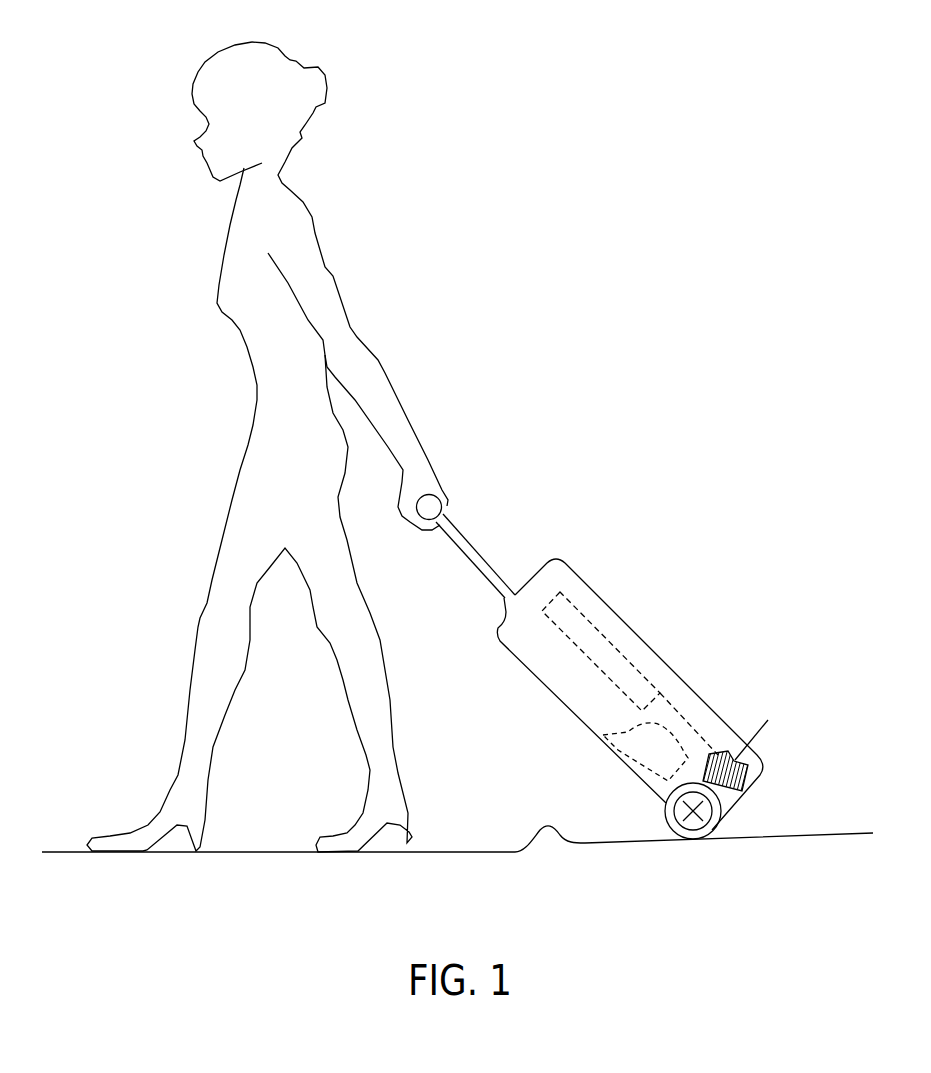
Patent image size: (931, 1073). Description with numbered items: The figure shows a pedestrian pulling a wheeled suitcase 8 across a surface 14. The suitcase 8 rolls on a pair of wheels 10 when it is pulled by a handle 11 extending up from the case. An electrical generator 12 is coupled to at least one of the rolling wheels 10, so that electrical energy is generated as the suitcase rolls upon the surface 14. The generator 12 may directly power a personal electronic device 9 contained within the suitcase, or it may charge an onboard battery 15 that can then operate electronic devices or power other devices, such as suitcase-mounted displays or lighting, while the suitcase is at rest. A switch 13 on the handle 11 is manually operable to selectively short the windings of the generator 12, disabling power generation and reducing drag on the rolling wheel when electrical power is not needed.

The wheeled suitcase 8 is at (605, 603).
The personal electronic device 9 is at (633, 645).
The wheels 10 is at (703, 837).
The handle 11 is at (457, 532).
The electrical generator 12 is at (733, 788).
The switch 13 is at (442, 508).
The surface 14 is at (585, 845).
The onboard battery 15 is at (603, 738).